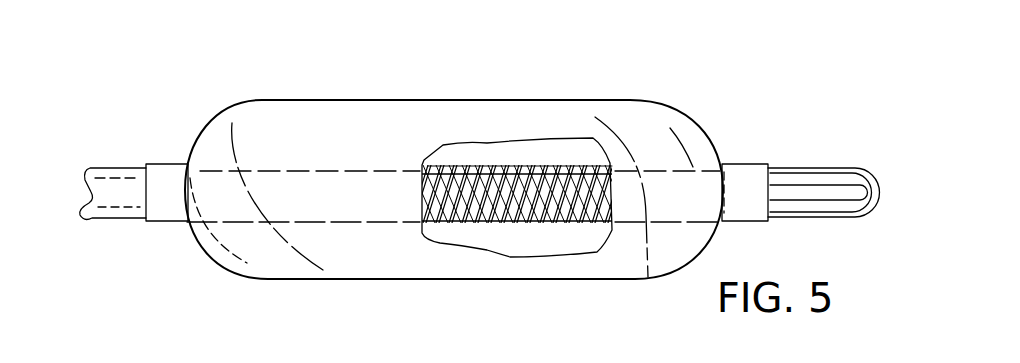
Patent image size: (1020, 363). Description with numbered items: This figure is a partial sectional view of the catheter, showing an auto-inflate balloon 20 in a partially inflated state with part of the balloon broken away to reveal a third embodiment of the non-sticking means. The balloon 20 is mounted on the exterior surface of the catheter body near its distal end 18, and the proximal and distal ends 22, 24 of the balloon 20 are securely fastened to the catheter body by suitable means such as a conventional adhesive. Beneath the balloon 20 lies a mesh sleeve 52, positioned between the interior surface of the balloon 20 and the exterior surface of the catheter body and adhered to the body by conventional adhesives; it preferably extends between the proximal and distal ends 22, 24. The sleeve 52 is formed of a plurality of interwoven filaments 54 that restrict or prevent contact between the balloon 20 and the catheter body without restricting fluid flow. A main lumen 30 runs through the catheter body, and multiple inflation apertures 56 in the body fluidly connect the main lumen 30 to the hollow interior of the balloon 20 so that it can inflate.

The distal end 18 is at (860, 168).
The balloon 20 is at (367, 121).
The proximal end of the balloon 22 is at (162, 163).
The distal end of the balloon 24 is at (745, 165).
The main lumen 30 is at (120, 222).
The mesh sleeve 52 is at (556, 167).
The filaments 54 is at (497, 225).
The inflation apertures 56 is at (548, 173).